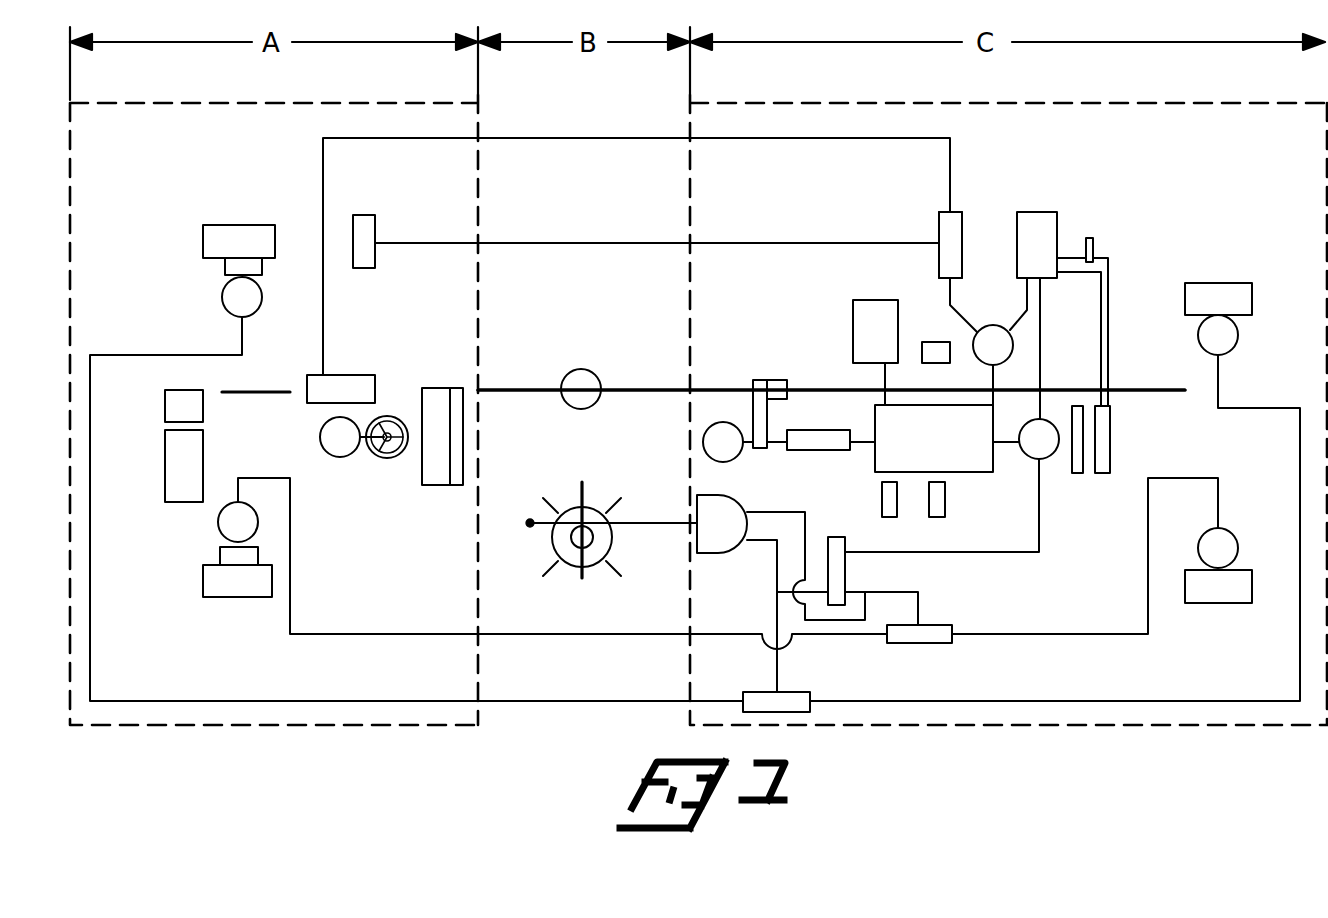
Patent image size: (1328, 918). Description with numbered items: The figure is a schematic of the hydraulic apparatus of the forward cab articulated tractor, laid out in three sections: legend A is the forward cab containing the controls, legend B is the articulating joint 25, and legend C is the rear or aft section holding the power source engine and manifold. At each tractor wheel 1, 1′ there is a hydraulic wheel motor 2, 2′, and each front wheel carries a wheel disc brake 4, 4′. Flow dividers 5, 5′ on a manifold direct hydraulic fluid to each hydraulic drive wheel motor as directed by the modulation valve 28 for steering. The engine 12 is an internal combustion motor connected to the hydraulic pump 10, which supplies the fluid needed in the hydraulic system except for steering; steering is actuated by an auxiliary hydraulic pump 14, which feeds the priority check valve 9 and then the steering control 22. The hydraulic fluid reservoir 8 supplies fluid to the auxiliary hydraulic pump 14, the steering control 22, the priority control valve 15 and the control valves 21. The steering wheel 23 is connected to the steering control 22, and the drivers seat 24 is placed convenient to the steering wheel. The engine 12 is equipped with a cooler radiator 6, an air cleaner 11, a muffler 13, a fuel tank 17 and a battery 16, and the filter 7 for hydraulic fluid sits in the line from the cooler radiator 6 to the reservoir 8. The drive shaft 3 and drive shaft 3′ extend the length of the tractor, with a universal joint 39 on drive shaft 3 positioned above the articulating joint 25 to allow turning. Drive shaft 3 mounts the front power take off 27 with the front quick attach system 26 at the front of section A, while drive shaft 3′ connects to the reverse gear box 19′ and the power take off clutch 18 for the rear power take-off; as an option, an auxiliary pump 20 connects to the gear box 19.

The tractor wheel 1 is at (1225, 590).
The tractor wheel 1′ is at (1222, 287).
The hydraulic wheel motor 2 is at (1225, 540).
The hydraulic wheel motor 2′ is at (1230, 335).
The drive shaft front PTO 3 is at (270, 393).
The drive shaft rear PTO 3′ is at (1132, 393).
The wheel disc brake 4 is at (222, 555).
The wheel disc brake 4′ is at (225, 268).
The flow divider on a manifold 5 is at (935, 640).
The flow divider on a manifold 5′ is at (838, 568).
The cooler radiator 6 is at (1077, 473).
The filter for hydraulic fluid 7 is at (1090, 238).
The hydraulic fluid reservoir 8 is at (1030, 218).
The priority check valve to steering control 9 is at (950, 212).
The hydraulic pump 10 is at (1036, 459).
The air cleaner 11 is at (943, 502).
The engine 12 is at (878, 470).
The muffler 13 is at (888, 517).
The auxiliary hydraulic pump 14 is at (1000, 326).
The priority control valve 15 is at (939, 245).
The battery 16 is at (938, 342).
The fuel tank 17 is at (853, 315).
The power take off clutch 18 is at (822, 450).
The gear box 19 is at (760, 380).
The reverse gear box 19′ is at (778, 380).
The auxiliary pump (optional) 20 is at (705, 442).
The control valve 21 is at (362, 268).
The steering control 22 is at (345, 380).
The steering wheel 23 is at (388, 460).
The drivers seat 24 is at (442, 486).
The articulating joint 25 is at (565, 562).
The front quick attach system 26 is at (165, 472).
The front power take off (PTO) 27 is at (165, 400).
The modulation valve for steering 28 is at (708, 500).
The universal joint 39 is at (578, 370).